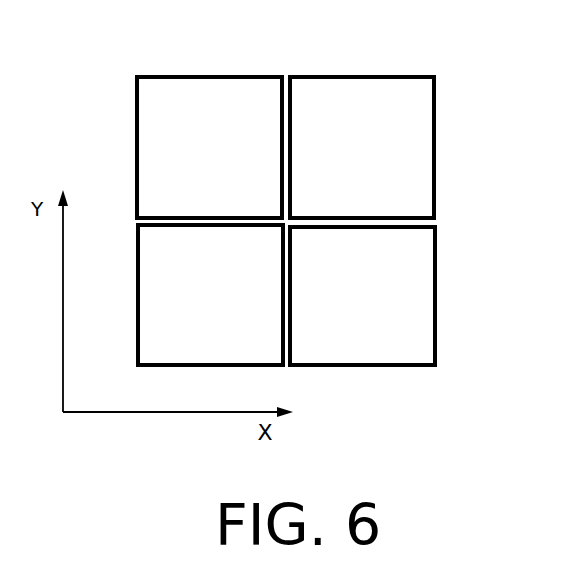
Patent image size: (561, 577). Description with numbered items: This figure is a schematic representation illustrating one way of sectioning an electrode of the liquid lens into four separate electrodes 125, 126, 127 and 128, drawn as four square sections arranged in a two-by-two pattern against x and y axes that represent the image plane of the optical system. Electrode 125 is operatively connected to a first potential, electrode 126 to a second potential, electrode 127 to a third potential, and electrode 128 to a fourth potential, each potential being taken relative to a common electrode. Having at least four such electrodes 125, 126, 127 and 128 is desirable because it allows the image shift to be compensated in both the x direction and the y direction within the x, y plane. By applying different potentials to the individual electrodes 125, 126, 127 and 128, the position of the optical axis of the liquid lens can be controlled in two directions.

The electrode 125 is at (215, 76).
The electrode 126 is at (383, 76).
The electrode 127 is at (436, 310).
The electrode 128 is at (137, 282).